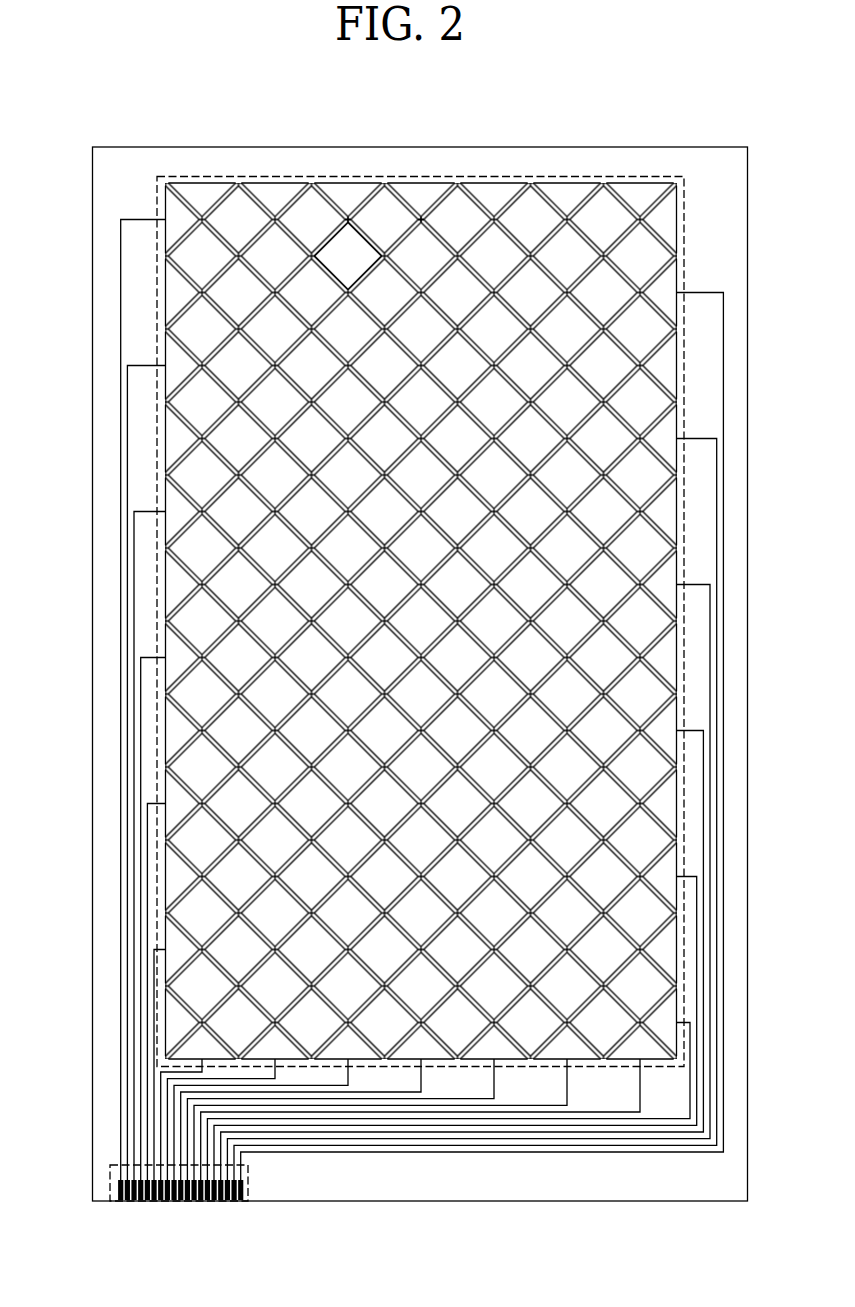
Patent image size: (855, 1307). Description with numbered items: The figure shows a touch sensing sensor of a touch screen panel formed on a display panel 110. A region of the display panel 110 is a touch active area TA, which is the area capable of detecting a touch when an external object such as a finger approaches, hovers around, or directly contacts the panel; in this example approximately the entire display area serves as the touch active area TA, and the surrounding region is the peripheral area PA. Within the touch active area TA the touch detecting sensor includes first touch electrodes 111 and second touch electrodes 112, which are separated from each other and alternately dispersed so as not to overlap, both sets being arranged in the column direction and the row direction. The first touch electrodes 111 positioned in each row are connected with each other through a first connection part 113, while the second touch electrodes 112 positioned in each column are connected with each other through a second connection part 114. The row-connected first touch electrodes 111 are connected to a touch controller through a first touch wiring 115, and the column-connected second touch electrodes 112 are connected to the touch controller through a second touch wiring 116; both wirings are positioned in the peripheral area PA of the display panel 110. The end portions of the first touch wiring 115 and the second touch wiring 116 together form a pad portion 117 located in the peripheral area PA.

The display panel 110 is at (558, 147).
The first touch electrodes 111 is at (470, 217).
The second touch electrodes 112 is at (356, 250).
The first connection part 113 is at (422, 217).
The second connection part 114 is at (345, 219).
The first touch wiring 115 is at (121, 277).
The second touch wiring 116 is at (493, 1082).
The pad portion 117 is at (248, 1185).
The touch active area TA is at (653, 175).
The peripheral area PA is at (112, 186).